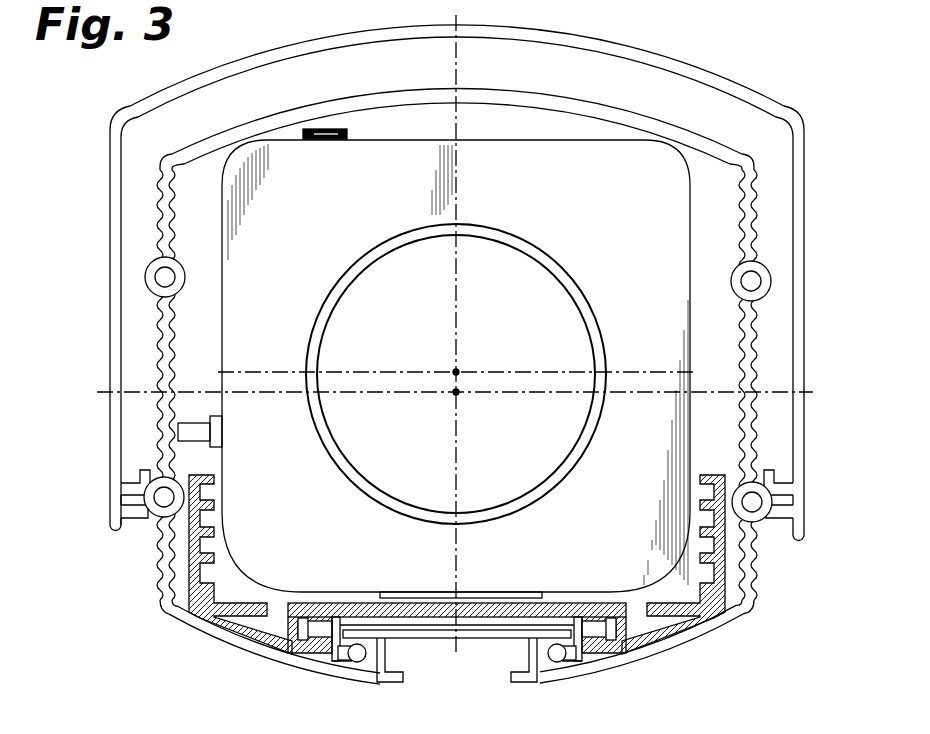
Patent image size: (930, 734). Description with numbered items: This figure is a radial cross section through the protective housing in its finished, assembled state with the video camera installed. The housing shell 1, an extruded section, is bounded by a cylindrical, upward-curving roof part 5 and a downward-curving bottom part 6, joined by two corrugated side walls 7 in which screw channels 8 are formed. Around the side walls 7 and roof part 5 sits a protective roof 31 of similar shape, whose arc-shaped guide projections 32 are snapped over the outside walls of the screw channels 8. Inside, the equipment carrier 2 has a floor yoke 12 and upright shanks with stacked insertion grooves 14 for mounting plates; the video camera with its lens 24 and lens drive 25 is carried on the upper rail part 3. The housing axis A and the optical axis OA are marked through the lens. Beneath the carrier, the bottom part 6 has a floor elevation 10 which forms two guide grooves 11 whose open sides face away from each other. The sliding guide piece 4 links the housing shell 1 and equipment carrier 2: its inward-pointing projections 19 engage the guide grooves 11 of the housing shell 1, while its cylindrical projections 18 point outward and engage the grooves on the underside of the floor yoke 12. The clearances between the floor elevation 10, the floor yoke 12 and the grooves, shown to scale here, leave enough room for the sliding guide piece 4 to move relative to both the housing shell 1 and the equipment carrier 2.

The housing shell 1 is at (457, 368).
The equipment carrier 2 is at (712, 468).
The upper rail part 3 is at (712, 612).
The sliding guide piece 4 is at (498, 622).
The roof part 5 is at (545, 101).
The bottom part 6 is at (232, 645).
The side walls 7 is at (174, 232).
The screw channels 8 is at (170, 282).
The floor elevation 10 is at (440, 640).
The guide grooves 11 is at (374, 676).
The floor yoke 12 is at (412, 603).
The insertion grooves 14 is at (208, 545).
The cylindrical projections 18 is at (323, 603).
The projections 19 is at (350, 662).
The lens 24 is at (558, 298).
The lens drive 25 is at (556, 200).
The protective roof 31 is at (742, 90).
The guide projections 32 is at (140, 520).
The optical axis OA is at (454, 370).
The housing axis A is at (458, 394).